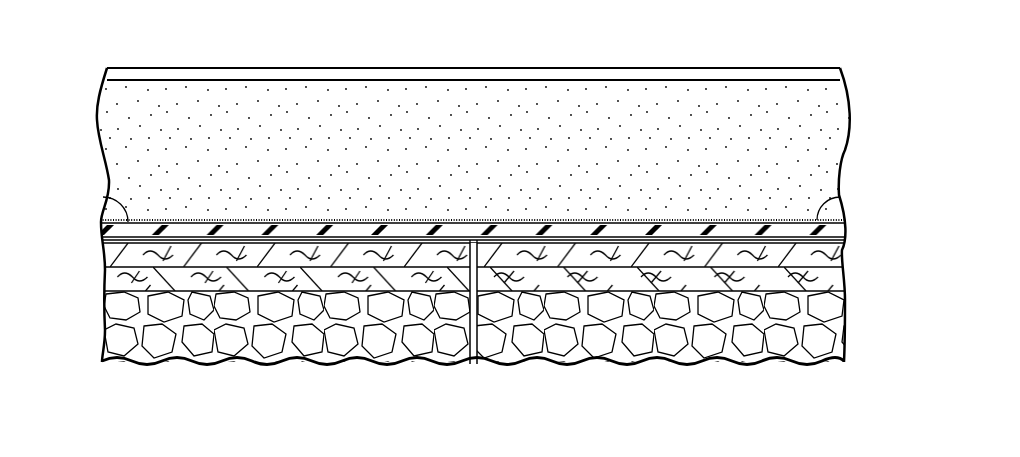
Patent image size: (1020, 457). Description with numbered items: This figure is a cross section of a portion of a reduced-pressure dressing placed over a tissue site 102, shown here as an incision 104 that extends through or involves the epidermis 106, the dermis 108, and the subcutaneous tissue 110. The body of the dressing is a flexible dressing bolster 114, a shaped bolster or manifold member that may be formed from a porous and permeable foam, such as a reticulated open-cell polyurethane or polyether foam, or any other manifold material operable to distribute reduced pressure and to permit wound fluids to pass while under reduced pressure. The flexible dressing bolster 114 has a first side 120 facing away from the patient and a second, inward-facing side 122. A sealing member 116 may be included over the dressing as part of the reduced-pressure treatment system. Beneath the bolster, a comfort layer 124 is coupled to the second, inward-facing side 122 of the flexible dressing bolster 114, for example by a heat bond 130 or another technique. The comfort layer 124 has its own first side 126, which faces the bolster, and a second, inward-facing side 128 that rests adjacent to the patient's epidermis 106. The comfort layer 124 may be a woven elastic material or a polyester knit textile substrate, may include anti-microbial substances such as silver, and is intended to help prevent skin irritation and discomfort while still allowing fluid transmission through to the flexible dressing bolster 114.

The tissue site 102 is at (468, 255).
The incision 104 is at (483, 250).
The epidermis 106 is at (472, 218).
The dermis 108 is at (103, 280).
The subcutaneous tissue 110 is at (103, 328).
The flexible dressing bolster 114 is at (497, 148).
The sealing member 116 is at (592, 69).
The first side 120 is at (145, 80).
The second, inward-facing side 122 is at (840, 196).
The comfort layer 124 is at (845, 232).
The first side 126 is at (100, 222).
The second, inward-facing side 128 is at (103, 238).
The heat bond 130 is at (103, 202).